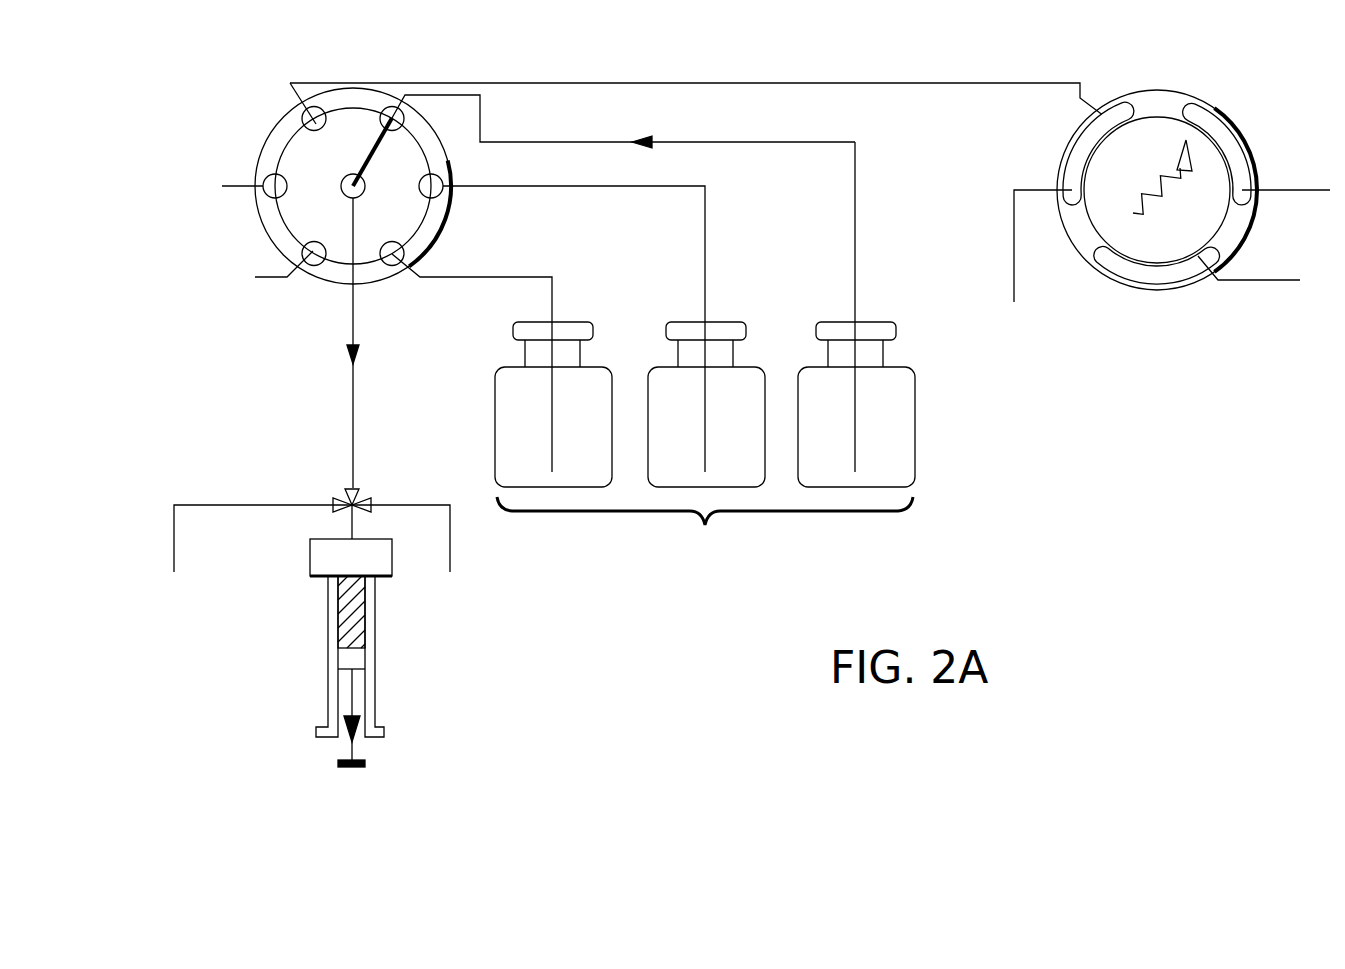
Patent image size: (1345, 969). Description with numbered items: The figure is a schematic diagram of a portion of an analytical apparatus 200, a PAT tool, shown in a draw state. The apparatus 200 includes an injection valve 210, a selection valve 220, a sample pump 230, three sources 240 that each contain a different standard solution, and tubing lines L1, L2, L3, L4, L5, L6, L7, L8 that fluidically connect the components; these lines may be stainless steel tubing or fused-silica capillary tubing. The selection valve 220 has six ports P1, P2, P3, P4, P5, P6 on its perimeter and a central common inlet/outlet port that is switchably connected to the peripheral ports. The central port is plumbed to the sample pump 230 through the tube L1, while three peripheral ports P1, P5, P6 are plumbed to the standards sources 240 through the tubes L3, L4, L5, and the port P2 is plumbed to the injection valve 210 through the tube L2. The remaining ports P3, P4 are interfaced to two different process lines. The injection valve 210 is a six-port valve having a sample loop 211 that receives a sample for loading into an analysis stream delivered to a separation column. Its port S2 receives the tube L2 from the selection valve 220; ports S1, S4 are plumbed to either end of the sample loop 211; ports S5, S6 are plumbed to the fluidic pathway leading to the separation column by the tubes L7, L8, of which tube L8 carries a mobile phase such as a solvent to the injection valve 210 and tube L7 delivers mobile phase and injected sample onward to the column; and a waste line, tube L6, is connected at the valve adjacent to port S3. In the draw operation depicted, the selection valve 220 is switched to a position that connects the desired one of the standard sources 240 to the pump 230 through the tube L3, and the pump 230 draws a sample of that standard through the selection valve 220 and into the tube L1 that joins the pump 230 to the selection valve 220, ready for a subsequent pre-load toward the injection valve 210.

The analytical apparatus 200 is at (492, 60).
The injection valve 210 is at (1250, 152).
The sample loop 211 is at (1186, 161).
The selection valve 220 is at (274, 136).
The sample pump 230 is at (377, 640).
The sources 240 is at (705, 443).
The tube L1 is at (355, 410).
The tube L2 is at (978, 84).
The tube L3 is at (857, 210).
The tube L4 is at (707, 240).
The tube L5 is at (554, 290).
The tube L6 is at (1012, 261).
The tube L7 is at (1320, 192).
The tube L8 is at (1265, 283).
The port P1 is at (394, 135).
The port P2 is at (323, 135).
The port P3 is at (290, 186).
The port P4 is at (319, 239).
The port P5 is at (388, 239).
The port P6 is at (416, 186).
The port S1 is at (1164, 138).
The port S2 is at (1136, 150).
The port S3 is at (1112, 195).
The port S4 is at (1112, 223).
The port S5 is at (1188, 227).
The port S6 is at (1200, 195).